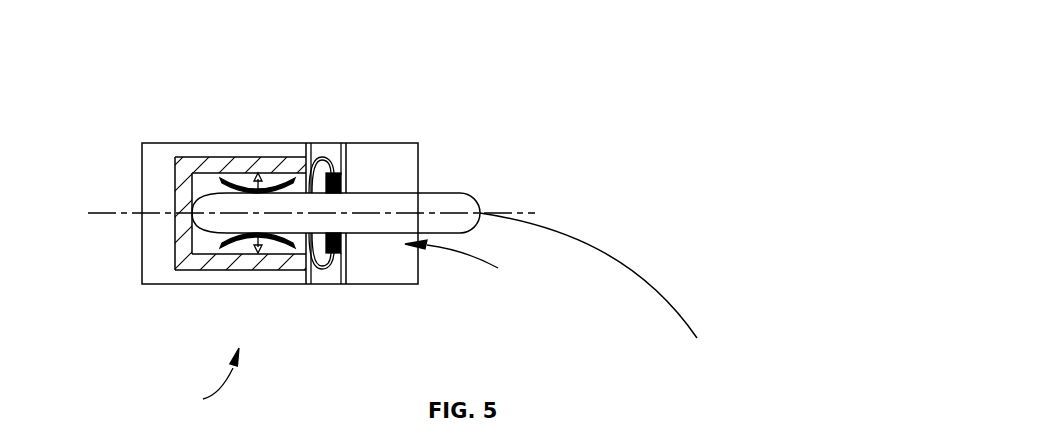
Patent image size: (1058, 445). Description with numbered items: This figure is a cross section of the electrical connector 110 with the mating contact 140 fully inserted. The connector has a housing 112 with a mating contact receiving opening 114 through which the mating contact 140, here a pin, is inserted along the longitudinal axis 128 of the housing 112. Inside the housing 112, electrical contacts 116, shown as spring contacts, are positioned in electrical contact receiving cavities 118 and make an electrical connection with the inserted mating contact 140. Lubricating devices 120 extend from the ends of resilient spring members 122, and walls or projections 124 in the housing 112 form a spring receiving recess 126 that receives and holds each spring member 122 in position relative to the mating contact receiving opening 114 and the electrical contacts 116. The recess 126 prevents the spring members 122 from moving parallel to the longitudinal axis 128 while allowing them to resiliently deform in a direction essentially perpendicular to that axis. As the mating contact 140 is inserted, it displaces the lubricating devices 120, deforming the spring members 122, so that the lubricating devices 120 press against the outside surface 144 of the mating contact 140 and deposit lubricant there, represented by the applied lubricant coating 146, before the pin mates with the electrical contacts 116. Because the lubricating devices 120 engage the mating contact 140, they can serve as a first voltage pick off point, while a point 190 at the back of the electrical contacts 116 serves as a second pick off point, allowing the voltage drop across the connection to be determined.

The electrical connector 110 is at (202, 386).
The housing 112 is at (165, 143).
The mating contact receiving opening 114 is at (475, 265).
The electrical contact 116 is at (245, 185).
The electrical contact receiving cavity 118 is at (203, 252).
The lubricating device 120 is at (340, 187).
The spring member 122 is at (322, 157).
The wall or projection 124 is at (306, 156).
The spring receiving recess 126 is at (330, 150).
The longitudinal axis 128 is at (98, 221).
The mating contact 140 is at (470, 192).
The outside surface 144 is at (400, 190).
The applied lubricant coating 146 is at (243, 227).
The point at the back of the contacts 190 is at (228, 184).